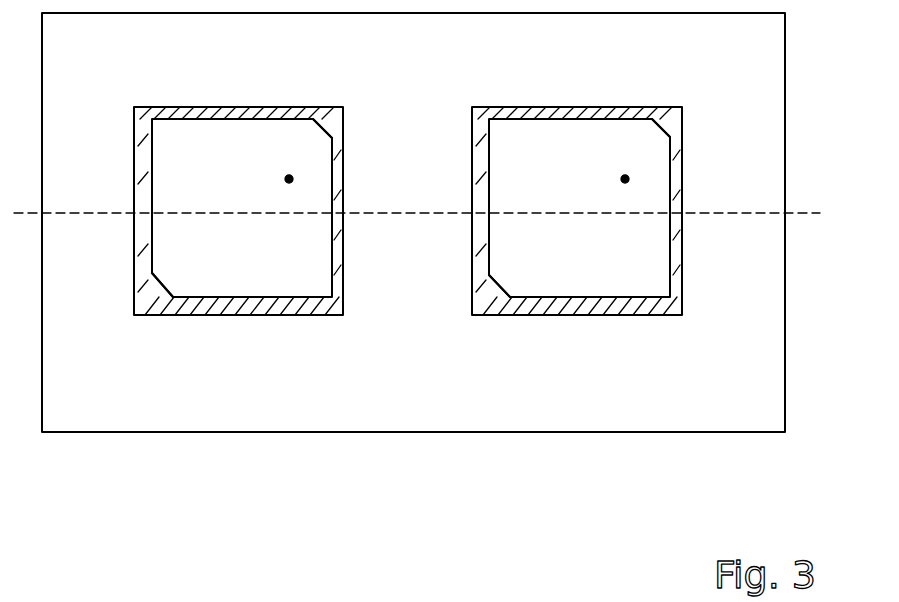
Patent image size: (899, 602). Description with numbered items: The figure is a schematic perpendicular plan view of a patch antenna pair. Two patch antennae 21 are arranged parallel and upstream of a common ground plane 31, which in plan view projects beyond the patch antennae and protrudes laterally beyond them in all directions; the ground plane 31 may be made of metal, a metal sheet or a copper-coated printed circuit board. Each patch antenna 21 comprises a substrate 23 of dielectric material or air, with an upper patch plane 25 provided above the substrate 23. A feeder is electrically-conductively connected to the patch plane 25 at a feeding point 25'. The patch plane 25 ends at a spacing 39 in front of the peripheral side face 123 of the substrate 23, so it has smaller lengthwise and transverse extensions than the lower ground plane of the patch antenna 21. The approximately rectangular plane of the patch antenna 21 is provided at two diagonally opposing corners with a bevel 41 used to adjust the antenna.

The patch antenna 21 is at (210, 354).
The substrate 23 is at (140, 268).
The patch plane 25 is at (411, 310).
The feeding point 25' is at (562, 175).
The ground plane 31 is at (327, 407).
The spacing 39 is at (335, 247).
The bevel 41 is at (160, 290).
The peripheral side face 123 is at (272, 320).